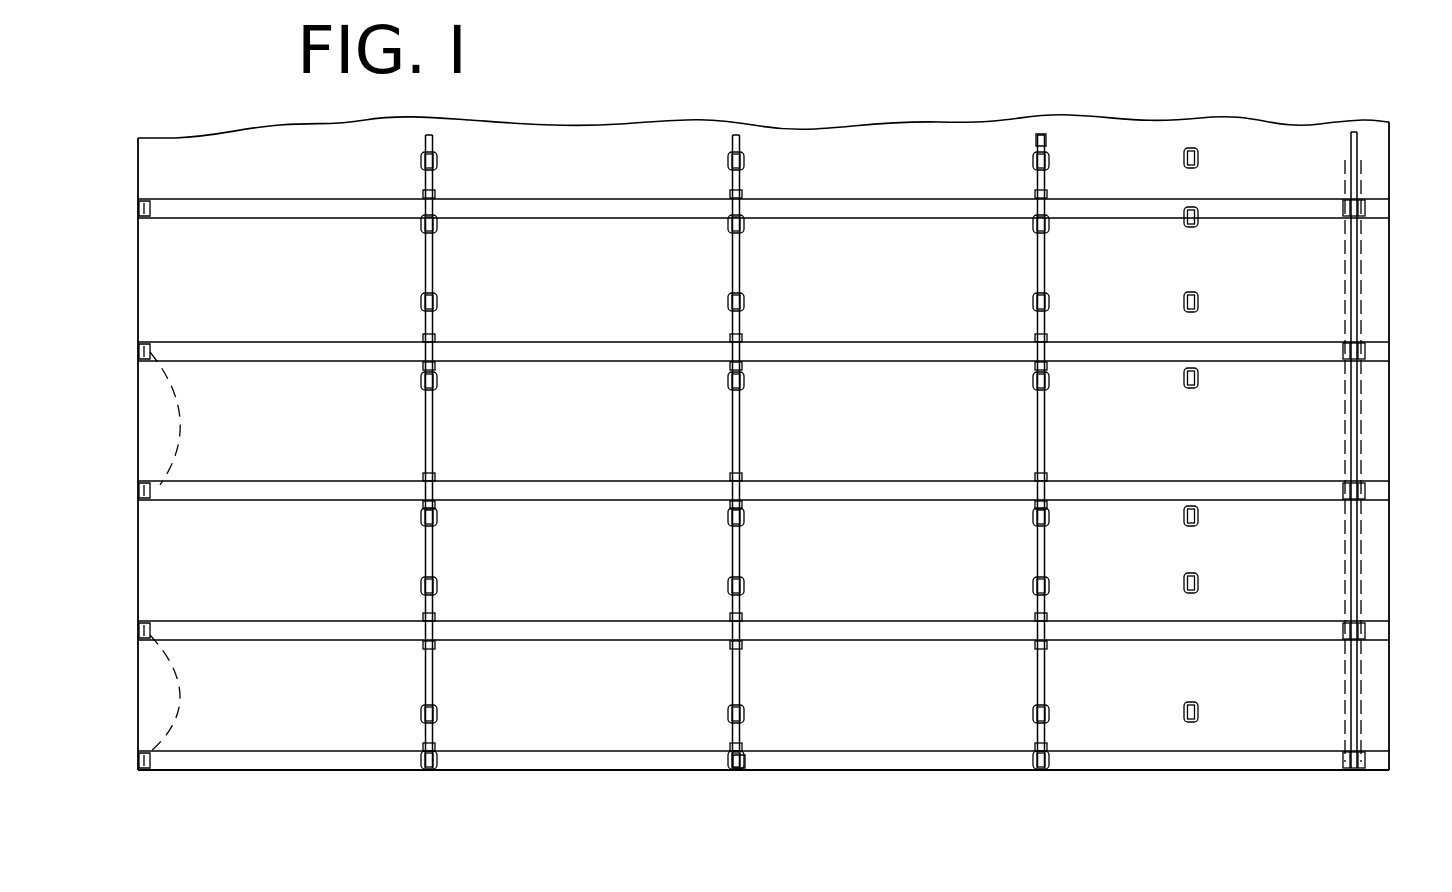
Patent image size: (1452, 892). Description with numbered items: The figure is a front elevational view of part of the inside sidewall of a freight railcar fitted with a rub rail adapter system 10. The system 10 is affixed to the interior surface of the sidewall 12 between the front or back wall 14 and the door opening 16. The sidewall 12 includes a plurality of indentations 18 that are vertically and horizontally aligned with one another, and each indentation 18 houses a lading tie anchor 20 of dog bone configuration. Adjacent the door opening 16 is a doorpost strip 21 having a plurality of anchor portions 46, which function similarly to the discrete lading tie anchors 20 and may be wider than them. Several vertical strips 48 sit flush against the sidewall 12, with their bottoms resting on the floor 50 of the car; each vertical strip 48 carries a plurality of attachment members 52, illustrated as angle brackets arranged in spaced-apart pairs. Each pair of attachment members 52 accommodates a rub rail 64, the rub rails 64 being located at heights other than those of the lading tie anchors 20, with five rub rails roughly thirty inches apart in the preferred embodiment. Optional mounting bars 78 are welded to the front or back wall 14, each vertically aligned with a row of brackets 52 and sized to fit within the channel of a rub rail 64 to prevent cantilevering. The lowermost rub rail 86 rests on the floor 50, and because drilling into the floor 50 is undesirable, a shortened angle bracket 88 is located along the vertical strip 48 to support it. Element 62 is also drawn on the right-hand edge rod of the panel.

The rub rail adapter system 10 is at (124, 436).
The sidewall 12 is at (190, 150).
The front or back wall 14 is at (140, 575).
The door opening 16 is at (1390, 120).
The indentation 18 is at (747, 153).
The lading tie anchor 20 is at (727, 162).
The doorpost strip 21 is at (1364, 407).
The anchor portion 46 is at (1362, 180).
The vertical strip 48 is at (1045, 138).
The floor 50 is at (605, 772).
The attachment member 52 is at (745, 368).
The edge rod 62 is at (1352, 142).
The rub rail 64 is at (302, 208).
The mounting bar 78 is at (175, 552).
The lowermost rub rail 86 is at (242, 760).
The shortened angle bracket 88 is at (743, 760).